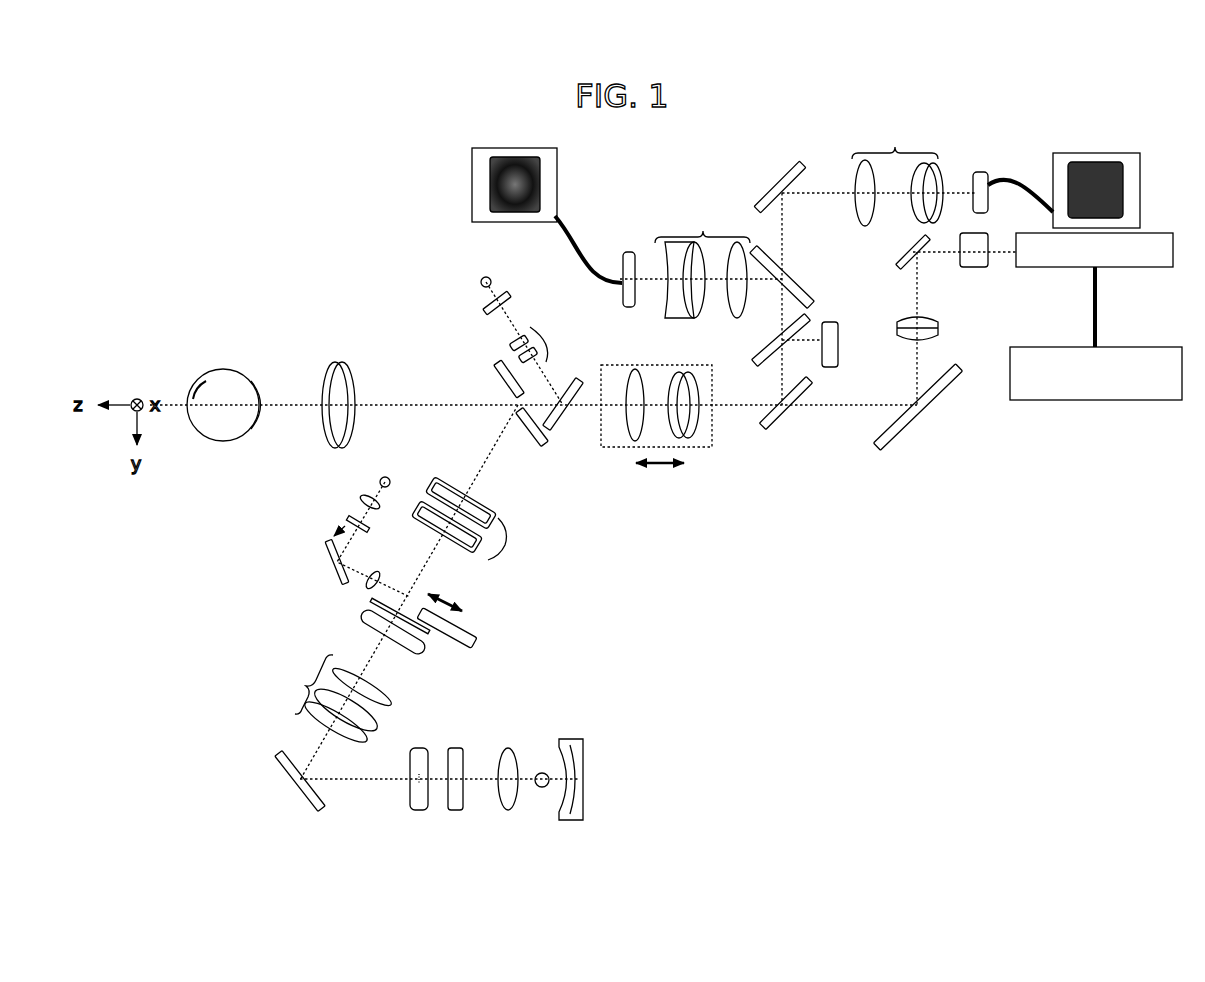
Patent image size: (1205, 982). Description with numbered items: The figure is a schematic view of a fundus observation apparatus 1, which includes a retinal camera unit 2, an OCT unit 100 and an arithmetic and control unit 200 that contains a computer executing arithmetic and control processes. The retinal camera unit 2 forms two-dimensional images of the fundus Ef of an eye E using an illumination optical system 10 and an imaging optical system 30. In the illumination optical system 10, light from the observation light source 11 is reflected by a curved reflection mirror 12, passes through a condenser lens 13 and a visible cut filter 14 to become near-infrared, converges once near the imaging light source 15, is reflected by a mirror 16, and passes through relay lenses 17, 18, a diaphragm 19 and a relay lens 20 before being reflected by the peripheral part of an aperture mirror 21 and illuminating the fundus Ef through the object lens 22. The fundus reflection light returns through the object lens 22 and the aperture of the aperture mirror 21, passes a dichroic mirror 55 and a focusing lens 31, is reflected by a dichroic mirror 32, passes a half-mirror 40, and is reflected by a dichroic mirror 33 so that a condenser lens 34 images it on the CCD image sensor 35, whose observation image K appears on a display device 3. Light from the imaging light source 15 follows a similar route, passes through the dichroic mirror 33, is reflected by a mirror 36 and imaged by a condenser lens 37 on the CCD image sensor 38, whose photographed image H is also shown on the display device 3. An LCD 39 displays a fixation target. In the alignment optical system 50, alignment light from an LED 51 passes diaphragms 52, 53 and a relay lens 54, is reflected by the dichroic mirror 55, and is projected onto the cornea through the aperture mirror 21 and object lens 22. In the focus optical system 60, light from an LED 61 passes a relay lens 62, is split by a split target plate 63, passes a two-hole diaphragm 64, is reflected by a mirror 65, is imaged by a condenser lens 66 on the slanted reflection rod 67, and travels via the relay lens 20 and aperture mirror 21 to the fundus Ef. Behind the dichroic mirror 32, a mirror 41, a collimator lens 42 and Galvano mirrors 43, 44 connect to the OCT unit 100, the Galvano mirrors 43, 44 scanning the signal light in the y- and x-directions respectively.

The fundus observation apparatus 1 is at (332, 151).
The retinal camera unit 2 is at (355, 238).
The display device 3 is at (530, 148).
The observation image K is at (490, 176).
The photographed image H is at (1123, 192).
The eye E is at (236, 373).
The fundus Ef is at (197, 387).
The illumination optical system 10 is at (578, 658).
The observation light source 11 is at (542, 773).
The reflection mirror 12 is at (584, 798).
The condenser lens 13 is at (508, 812).
The visible cut filter 14 is at (455, 812).
The imaging light source 15 is at (414, 812).
The mirror 16 is at (290, 795).
The relay lens 17 is at (296, 676).
The relay lens 18 is at (368, 616).
The diaphragm 19 is at (412, 642).
The relay lens 20 is at (510, 549).
The aperture mirror 21 is at (536, 440).
The object lens 22 is at (337, 362).
The imaging optical system 30 is at (806, 523).
The focusing lens 31 is at (700, 455).
The dichroic mirror 32 is at (782, 418).
The dichroic mirror 33 is at (800, 277).
The condenser lens 34 is at (703, 228).
The CCD image sensor 35 is at (628, 251).
The mirror 36 is at (775, 188).
The condenser lens 37 is at (900, 141).
The CCD image sensor 38 is at (981, 172).
The LCD 39 is at (838, 356).
The half-mirror 40 is at (760, 342).
The mirror 41 is at (940, 398).
The collimator lens 42 is at (896, 326).
The Galvano mirror 43 is at (898, 258).
The Galvano mirror 44 is at (970, 268).
The alignment optical system 50 is at (478, 340).
The LED 51 is at (481, 280).
The diaphragm 52 is at (484, 306).
The diaphragm 53 is at (520, 312).
The relay lens 54 is at (560, 332).
The dichroic mirror 55 is at (566, 428).
The focus optical system 60 is at (280, 519).
The LED 61 is at (390, 478).
The relay lens 62 is at (360, 500).
The split target plate 63 is at (346, 519).
The two-hole diaphragm 64 is at (358, 548).
The mirror 65 is at (327, 544).
The condenser lens 66 is at (366, 584).
The reflection rod 67 is at (470, 627).
The OCT unit 100 is at (1160, 268).
The arithmetic and control unit 200 is at (1158, 400).